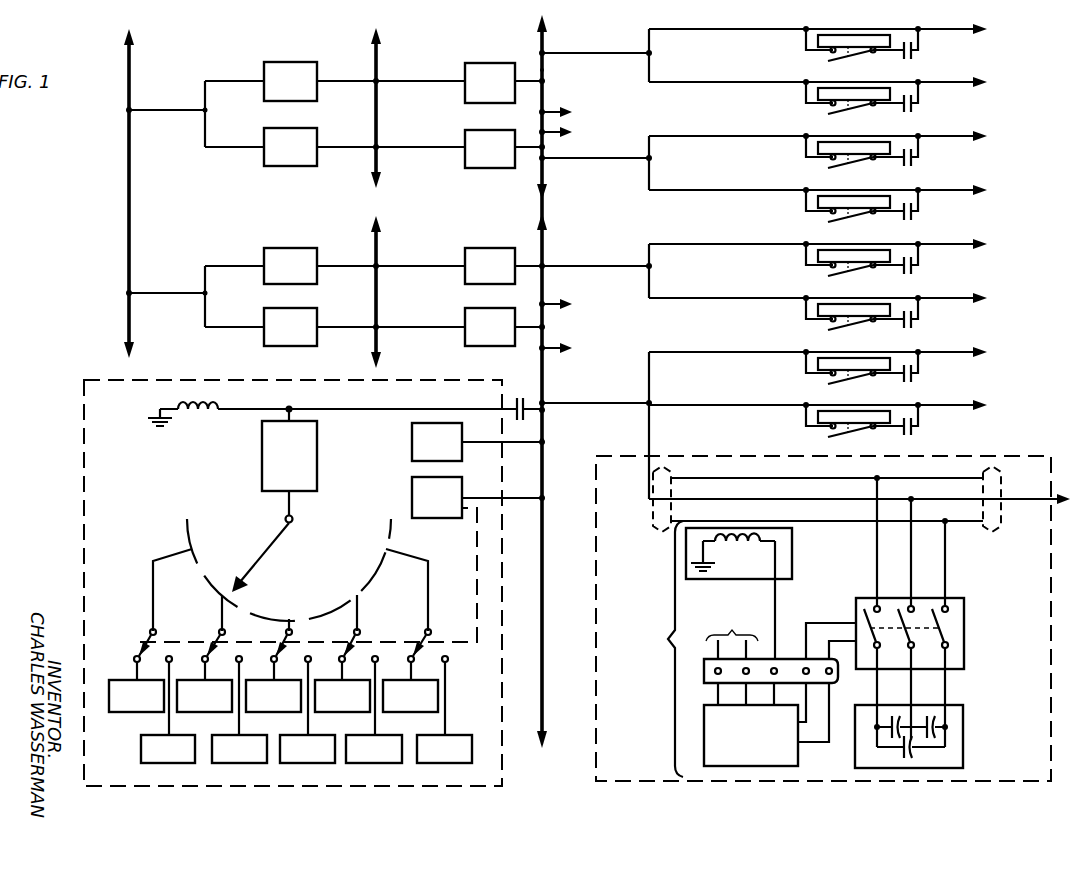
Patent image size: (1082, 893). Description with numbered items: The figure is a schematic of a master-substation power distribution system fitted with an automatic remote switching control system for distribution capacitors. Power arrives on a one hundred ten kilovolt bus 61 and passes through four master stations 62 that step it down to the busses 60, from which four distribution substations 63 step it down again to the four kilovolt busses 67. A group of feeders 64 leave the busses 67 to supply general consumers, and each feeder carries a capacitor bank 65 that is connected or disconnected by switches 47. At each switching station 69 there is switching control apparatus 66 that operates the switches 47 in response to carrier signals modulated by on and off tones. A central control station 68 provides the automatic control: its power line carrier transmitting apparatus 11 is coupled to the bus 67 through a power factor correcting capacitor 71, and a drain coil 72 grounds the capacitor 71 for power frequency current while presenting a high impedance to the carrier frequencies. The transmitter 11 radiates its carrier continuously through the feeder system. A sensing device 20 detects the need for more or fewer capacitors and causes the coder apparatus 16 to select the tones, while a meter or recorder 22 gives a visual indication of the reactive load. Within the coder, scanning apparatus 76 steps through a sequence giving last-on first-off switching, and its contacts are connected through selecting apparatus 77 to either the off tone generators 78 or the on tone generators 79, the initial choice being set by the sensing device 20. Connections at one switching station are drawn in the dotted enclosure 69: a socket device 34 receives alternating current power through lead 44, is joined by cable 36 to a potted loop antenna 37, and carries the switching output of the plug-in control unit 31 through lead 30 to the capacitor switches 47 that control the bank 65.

The power line carrier transmitting apparatus 11 is at (274, 462).
The coder apparatus 16 is at (150, 595).
The sensing device 20 is at (424, 499).
The meter or recorder 22 is at (424, 447).
The lead 30 is at (831, 712).
The control unit 31 is at (704, 727).
The socket device 34 is at (704, 668).
The cable 36 is at (778, 584).
The potted loop antenna 37 is at (722, 578).
The lead 44 is at (732, 634).
The switches 47 is at (852, 56).
The busses 60 is at (379, 120).
The bus 61 is at (146, 181).
The master stations 62 is at (300, 64).
The distribution substations 63 is at (500, 66).
The feeders 64 is at (573, 53).
The capacitor banks 65 is at (913, 56).
The switching control apparatus 66 is at (818, 37).
The busses 67 is at (546, 72).
The central control station 68 is at (536, 706).
The switching stations 69 is at (805, 52).
The power factor correcting capacitor 71 is at (521, 399).
The drain coil 72 is at (180, 418).
The scanning apparatus 76 is at (236, 546).
The selecting apparatus 77 is at (134, 647).
The off tone generators 78 is at (104, 700).
The on tone generators 79 is at (138, 752).